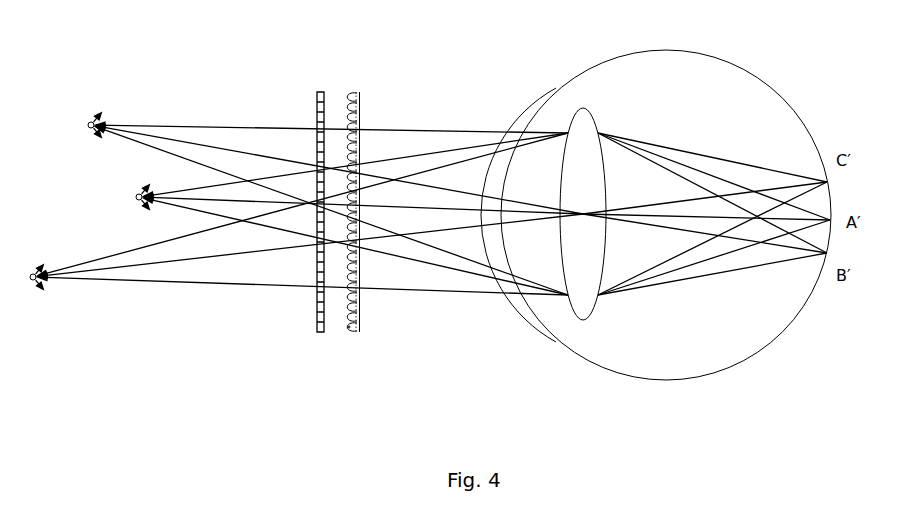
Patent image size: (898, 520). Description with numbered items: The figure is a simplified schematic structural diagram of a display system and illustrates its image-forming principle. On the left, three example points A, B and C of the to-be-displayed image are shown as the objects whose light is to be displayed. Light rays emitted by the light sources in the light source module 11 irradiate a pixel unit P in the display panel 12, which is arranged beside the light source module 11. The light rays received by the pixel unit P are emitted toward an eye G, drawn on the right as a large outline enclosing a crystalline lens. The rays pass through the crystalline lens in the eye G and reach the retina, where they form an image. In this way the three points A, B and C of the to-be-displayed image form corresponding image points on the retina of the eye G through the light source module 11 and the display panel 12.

The light source module 11 is at (317, 323).
The display panel 12 is at (358, 327).
The eye G is at (740, 67).
The pixel unit P is at (348, 327).
The point A of the to-be-displayed image A is at (349, 214).
The point B of the to-be-displayed image B is at (324, 204).
The point C of the to-be-displayed image C is at (305, 221).